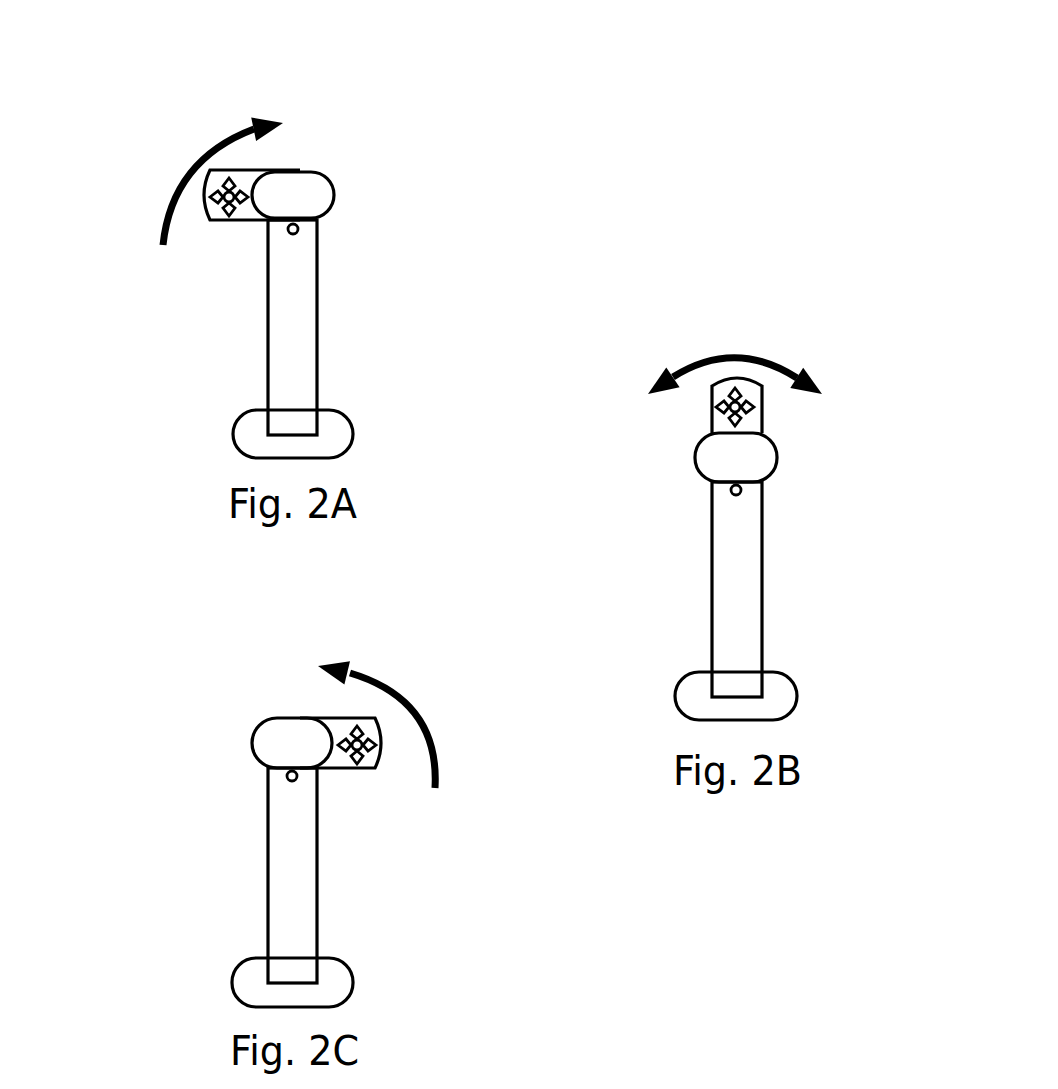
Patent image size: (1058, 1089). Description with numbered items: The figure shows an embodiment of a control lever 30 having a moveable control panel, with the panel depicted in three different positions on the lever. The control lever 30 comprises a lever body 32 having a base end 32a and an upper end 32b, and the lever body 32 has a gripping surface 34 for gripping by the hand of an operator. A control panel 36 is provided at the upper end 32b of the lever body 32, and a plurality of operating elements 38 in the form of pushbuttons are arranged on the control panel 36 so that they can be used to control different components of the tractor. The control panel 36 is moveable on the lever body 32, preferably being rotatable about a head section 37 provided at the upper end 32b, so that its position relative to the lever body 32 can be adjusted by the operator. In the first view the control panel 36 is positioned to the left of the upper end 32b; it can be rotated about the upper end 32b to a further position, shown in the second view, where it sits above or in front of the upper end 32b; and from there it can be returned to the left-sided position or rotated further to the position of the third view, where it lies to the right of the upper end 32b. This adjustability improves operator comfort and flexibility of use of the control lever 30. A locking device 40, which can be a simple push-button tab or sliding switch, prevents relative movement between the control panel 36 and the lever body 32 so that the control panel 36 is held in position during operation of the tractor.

In FIG. 2A, the control lever 30 is at (158, 128).
In FIG. 2B, the control lever 30 is at (633, 448).
In FIG. 2C, the control lever 30 is at (168, 688).
In FIG. 2A, the lever body 32 is at (268, 318).
In FIG. 2B, the lever body 32 is at (712, 530).
In FIG. 2C, the lever body 32 is at (268, 855).
In FIG. 2A, the base end 32a is at (191, 450).
In FIG. 2B, the base end 32a is at (638, 684).
In FIG. 2C, the base end 32a is at (190, 994).
In FIG. 2A, the upper end 32b is at (332, 137).
In FIG. 2B, the upper end 32b is at (811, 447).
In FIG. 2C, the upper end 32b is at (194, 762).
In FIG. 2A, the gripping surface 34 is at (310, 302).
In FIG. 2B, the gripping surface 34 is at (762, 572).
In FIG. 2C, the gripping surface 34 is at (317, 845).
In FIG. 2A, the control panel 36 is at (238, 222).
In FIG. 2B, the control panel 36 is at (745, 387).
In FIG. 2C, the control panel 36 is at (370, 763).
In FIG. 2A, the head section 37 is at (334, 193).
In FIG. 2B, the head section 37 is at (763, 462).
In FIG. 2C, the head section 37 is at (292, 735).
In FIG. 2A, the operating elements 38 is at (210, 218).
In FIG. 2A, the locking device 40 is at (297, 231).